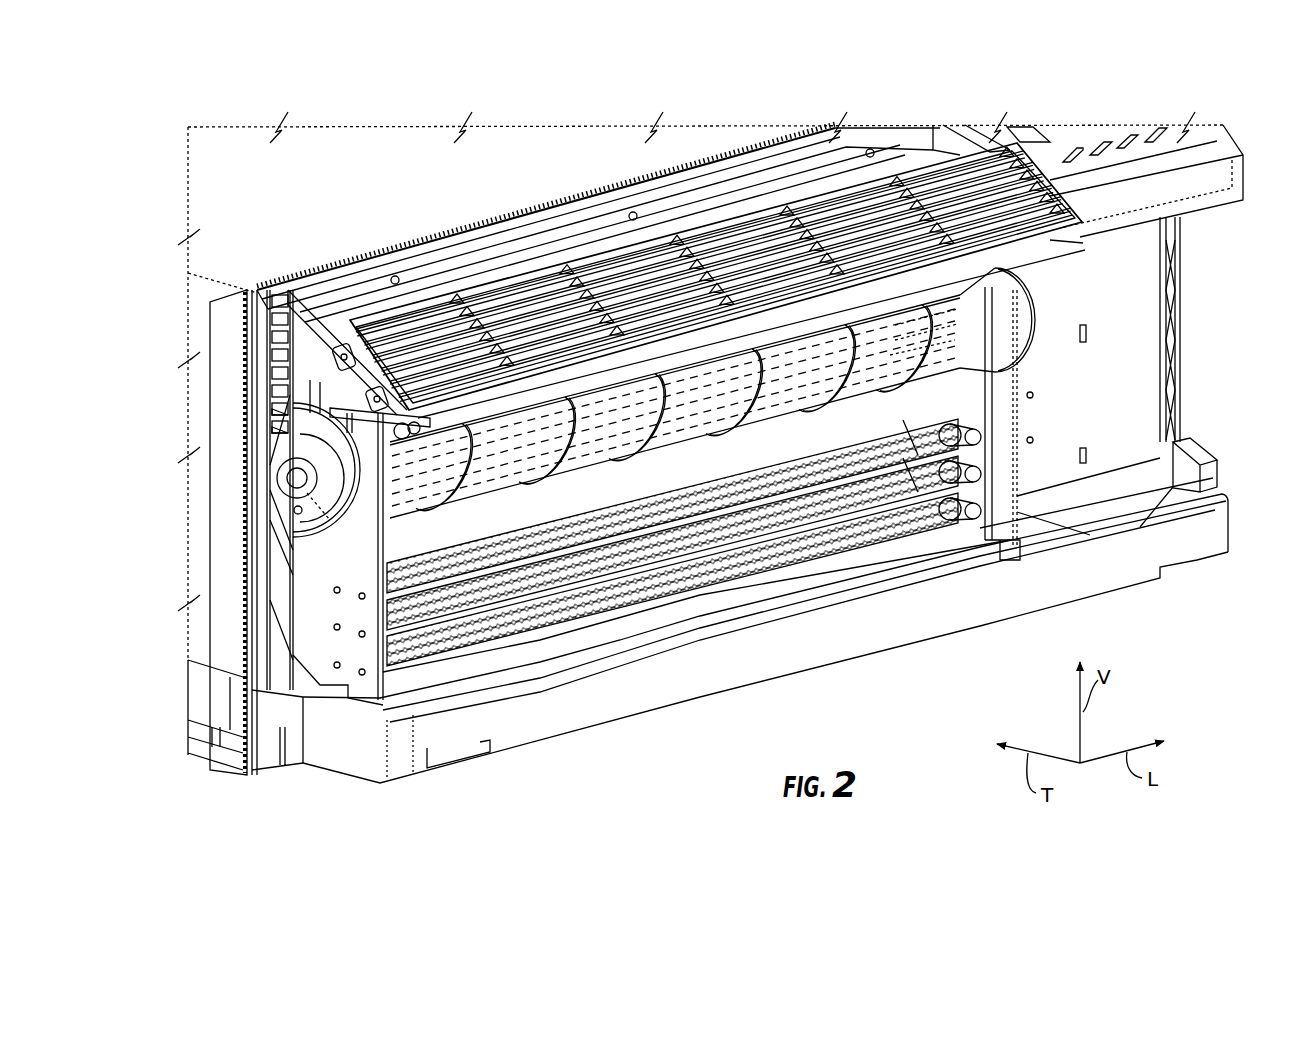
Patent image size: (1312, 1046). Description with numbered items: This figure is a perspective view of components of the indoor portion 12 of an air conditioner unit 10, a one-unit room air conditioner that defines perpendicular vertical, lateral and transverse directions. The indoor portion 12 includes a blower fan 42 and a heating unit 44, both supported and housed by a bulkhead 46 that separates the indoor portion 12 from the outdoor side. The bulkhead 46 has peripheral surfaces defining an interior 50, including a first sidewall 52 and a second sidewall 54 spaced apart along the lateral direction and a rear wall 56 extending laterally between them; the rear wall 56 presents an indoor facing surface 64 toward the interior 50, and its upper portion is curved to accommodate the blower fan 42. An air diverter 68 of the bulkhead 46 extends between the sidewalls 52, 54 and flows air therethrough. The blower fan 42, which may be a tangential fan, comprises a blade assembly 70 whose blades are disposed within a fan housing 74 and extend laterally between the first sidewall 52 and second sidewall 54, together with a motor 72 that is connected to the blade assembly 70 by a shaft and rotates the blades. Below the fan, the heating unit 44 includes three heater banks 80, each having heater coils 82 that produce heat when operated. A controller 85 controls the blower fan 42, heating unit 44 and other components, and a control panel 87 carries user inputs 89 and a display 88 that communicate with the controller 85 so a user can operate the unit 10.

The air conditioner unit 10 is at (377, 199).
The indoor portion 12 is at (281, 778).
The blower fan 42 is at (1028, 349).
The heating unit 44 is at (727, 599).
The bulkhead 46 is at (222, 549).
The interior 50 is at (724, 471).
The first sidewall 52 is at (310, 584).
The second sidewall 54 is at (963, 403).
The rear wall 56 is at (400, 545).
The indoor facing surface 64 is at (852, 433).
The air diverter 68 is at (745, 242).
The blade assembly 70 is at (947, 343).
The motor 72 is at (1028, 303).
The fan housing 74 is at (947, 328).
The heater bank 80 is at (460, 585).
The heater coil 82 is at (600, 617).
The controller 85 is at (1247, 187).
The control panel 87 is at (1145, 135).
The display 88 is at (1025, 138).
The user inputs 89 is at (1100, 148).